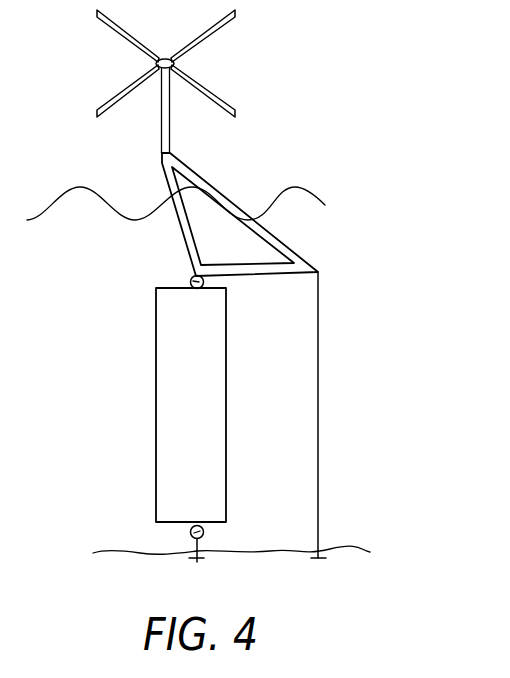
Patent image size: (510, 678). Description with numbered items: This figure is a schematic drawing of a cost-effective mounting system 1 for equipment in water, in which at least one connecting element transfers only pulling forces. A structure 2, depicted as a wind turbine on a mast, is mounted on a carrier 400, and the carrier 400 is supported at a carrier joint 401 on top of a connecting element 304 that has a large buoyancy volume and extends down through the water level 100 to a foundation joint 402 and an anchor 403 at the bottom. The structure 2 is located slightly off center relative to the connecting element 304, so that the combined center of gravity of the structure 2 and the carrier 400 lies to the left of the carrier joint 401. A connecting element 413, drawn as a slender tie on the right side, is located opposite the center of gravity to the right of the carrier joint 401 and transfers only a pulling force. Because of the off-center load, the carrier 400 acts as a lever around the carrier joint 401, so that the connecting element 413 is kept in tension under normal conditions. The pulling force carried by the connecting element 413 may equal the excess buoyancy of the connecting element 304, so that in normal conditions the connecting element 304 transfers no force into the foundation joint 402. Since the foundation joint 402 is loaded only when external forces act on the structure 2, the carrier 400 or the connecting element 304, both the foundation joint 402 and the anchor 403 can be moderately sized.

The water level 100 is at (77, 185).
The wind turbine system 1 is at (114, 255).
The structure 2 is at (160, 125).
The carrier 400 is at (283, 250).
The carrier joint 401 is at (192, 278).
The connecting element 304 is at (163, 342).
The foundation joint 402 is at (190, 532).
The anchor 403 is at (200, 560).
The connecting element 413 is at (320, 297).